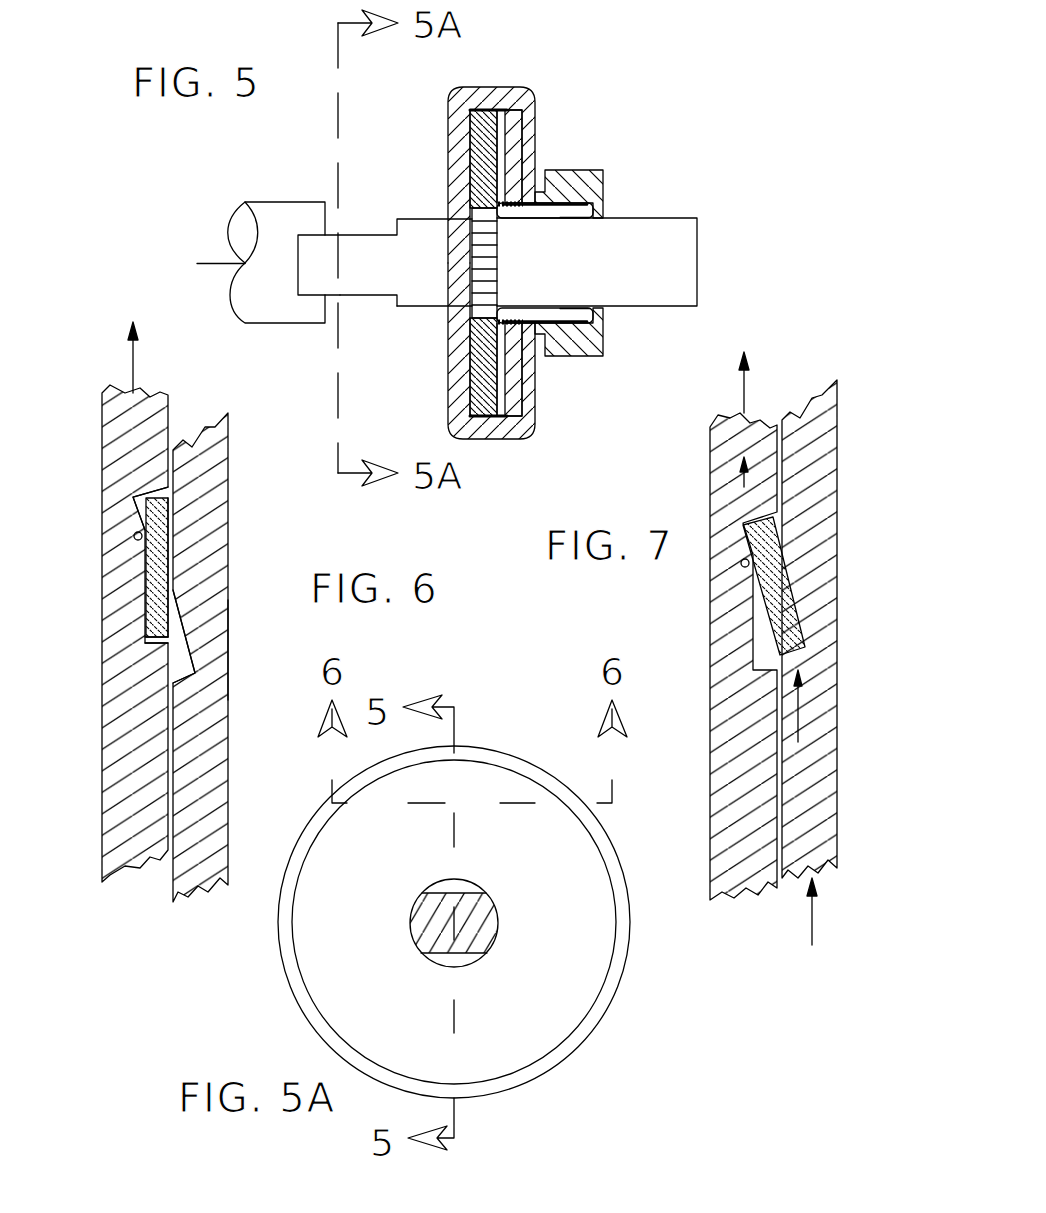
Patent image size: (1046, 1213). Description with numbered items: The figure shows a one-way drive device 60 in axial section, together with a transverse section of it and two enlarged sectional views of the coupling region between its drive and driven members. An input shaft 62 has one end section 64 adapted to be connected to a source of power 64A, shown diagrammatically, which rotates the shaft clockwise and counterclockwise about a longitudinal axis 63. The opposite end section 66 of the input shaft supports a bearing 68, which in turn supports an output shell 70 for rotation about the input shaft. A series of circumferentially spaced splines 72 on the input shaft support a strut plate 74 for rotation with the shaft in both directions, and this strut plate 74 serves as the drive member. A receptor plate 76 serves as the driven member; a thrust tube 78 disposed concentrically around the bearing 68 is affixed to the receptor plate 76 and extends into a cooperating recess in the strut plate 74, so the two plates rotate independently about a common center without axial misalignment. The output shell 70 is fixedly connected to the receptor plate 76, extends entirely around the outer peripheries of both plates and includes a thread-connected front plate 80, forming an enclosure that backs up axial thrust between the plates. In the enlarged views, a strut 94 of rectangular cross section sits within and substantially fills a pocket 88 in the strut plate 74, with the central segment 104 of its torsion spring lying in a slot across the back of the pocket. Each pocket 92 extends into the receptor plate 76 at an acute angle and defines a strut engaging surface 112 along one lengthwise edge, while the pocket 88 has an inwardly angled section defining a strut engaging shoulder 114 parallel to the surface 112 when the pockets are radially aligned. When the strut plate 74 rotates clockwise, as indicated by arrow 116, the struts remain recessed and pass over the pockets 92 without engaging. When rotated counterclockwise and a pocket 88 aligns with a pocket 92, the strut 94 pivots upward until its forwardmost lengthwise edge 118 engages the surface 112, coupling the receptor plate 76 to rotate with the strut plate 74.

In FIG. 5, the one-way drive device 60 is at (423, 342).
In FIG. 5, the input shaft 62 is at (343, 298).
In FIG. 5, the longitudinal axis 63 is at (197, 264).
In FIG. 5, the end section 64 is at (352, 245).
In FIG. 5, the source of power 64A is at (323, 201).
In FIG. 5, the opposite end section 66 is at (677, 228).
In FIG. 5, the bearing 68 is at (577, 215).
In FIG. 5, the output shell 70 is at (580, 178).
In FIG. 5, the splines 72 is at (485, 282).
In FIG. 5, the strut plate 74 is at (482, 405).
In FIG. 6, the strut plate 74 is at (145, 430).
In FIG. 7, the strut plate 74 is at (737, 697).
In FIG. 5, the receptor plate 76 is at (515, 357).
In FIG. 6, the receptor plate 76 is at (203, 528).
In FIG. 7, the receptor plate 76 is at (793, 447).
In FIG. 5, the thrust tube 78 is at (512, 212).
In FIG. 5, the front plate 80 is at (453, 147).
In FIG. 6, the pocket 88 is at (153, 583).
In FIG. 6, the pocket 92 is at (185, 612).
In FIG. 6, the strut 94 is at (163, 508).
In FIG. 7, the strut 94 is at (760, 530).
In FIG. 6, the central segment 104 is at (137, 537).
In FIG. 7, the central segment 104 is at (743, 563).
In FIG. 6, the strut engaging surface 112 is at (229, 647).
In FIG. 6, the strut engaging shoulder 114 is at (148, 490).
In FIG. 6, the arrow 116 is at (133, 372).
In FIG. 6, the forwardmost lengthwise edge 118 is at (143, 647).